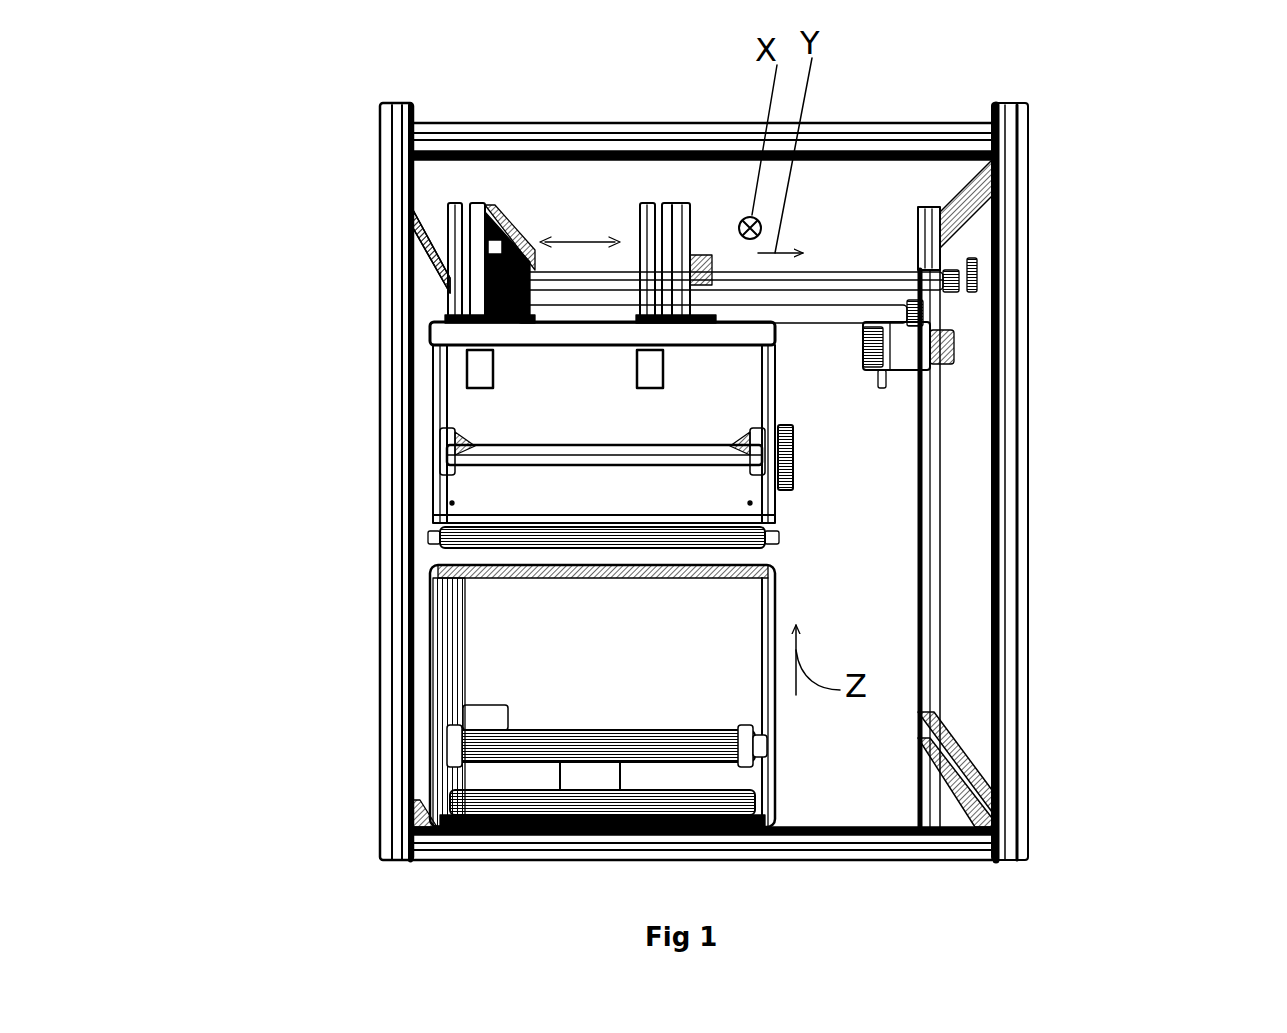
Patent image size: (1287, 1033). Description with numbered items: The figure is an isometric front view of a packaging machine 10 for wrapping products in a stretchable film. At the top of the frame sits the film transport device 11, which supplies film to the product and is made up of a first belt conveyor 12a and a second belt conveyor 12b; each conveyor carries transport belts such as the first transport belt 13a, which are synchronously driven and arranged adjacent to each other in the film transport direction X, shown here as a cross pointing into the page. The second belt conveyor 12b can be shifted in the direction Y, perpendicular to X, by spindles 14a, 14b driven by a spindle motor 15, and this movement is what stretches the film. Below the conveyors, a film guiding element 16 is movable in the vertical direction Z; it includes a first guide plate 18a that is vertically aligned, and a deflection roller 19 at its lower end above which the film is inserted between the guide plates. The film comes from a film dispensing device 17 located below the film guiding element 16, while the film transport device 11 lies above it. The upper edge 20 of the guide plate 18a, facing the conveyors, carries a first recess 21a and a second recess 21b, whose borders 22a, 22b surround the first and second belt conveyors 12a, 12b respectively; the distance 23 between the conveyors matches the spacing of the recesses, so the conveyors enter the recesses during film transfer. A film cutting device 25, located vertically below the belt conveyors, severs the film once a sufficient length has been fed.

The packaging machine 10 is at (1123, 122).
The film transport device 11 is at (440, 203).
The first belt conveyor 12a is at (460, 205).
The second belt conveyor 12b is at (660, 198).
The first transport belt 13a is at (440, 240).
The spindle 14a is at (827, 280).
The spindle 14b is at (850, 317).
The spindle motor 15 is at (913, 347).
The film guiding element 16 is at (797, 533).
The film dispensing device 17 is at (520, 647).
The first guide plate 18a is at (433, 450).
The deflection roller 19 is at (533, 534).
The upper edge 20 is at (515, 408).
The first recess 21a is at (475, 378).
The second recess 21b is at (655, 382).
The border of the first recess 22a is at (448, 350).
The border of the second recess 22b is at (663, 377).
The distance between the two belt conveyors 23 is at (576, 238).
The film cutting device 25 is at (520, 333).